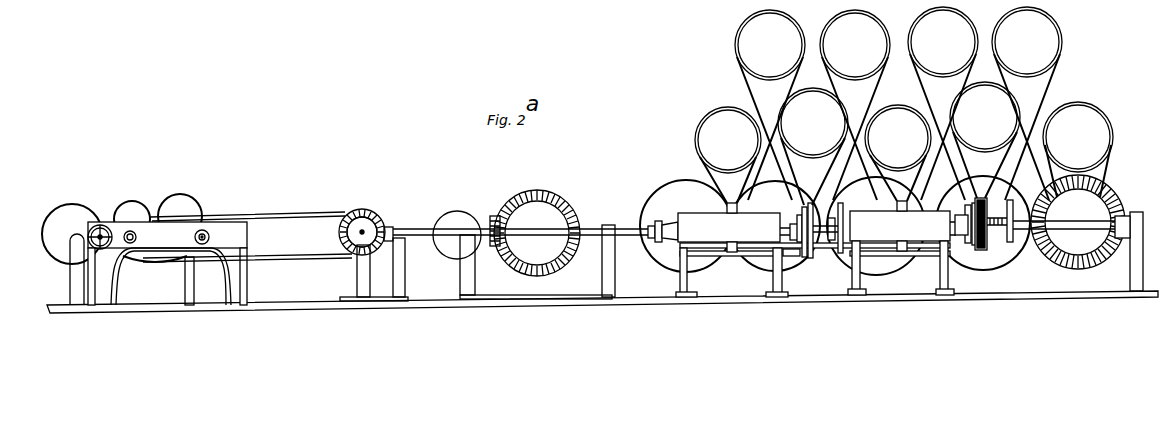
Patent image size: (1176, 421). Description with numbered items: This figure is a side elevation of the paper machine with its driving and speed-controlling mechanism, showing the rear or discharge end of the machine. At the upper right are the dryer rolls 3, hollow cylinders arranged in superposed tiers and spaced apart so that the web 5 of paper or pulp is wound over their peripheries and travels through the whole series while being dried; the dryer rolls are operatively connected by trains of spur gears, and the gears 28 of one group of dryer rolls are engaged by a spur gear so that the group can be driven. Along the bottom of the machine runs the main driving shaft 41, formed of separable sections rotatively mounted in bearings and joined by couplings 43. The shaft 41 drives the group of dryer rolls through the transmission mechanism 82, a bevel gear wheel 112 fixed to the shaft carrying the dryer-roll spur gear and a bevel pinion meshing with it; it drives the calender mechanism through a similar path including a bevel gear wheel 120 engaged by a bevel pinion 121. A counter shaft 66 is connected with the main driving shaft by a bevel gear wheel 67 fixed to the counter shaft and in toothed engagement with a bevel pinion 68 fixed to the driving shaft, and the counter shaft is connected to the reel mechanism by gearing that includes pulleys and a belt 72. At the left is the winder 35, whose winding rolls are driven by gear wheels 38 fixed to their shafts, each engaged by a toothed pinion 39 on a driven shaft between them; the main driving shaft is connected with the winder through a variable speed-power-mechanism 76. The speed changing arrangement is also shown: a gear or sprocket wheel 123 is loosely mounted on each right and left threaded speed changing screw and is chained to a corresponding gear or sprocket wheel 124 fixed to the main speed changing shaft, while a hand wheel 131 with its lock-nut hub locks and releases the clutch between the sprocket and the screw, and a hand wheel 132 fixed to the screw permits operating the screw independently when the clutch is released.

The dryer rolls 3 is at (840, 73).
The web 5 is at (920, 80).
The gears 28 is at (672, 192).
The winder 35 is at (154, 204).
The gear wheels 38 is at (76, 214).
The toothed gear wheel or pinion 39 is at (133, 213).
The main driving shaft 41 is at (960, 233).
The couplings 43 is at (657, 242).
The counter shaft 66 is at (361, 230).
The bevel gear wheel 67 is at (370, 212).
The bevel pinion 68 is at (389, 227).
The belt 72 is at (433, 211).
The variable speed-power-mechanism 76 is at (227, 230).
The transmission mechanism 82 is at (923, 228).
The bevel gear wheel 112 is at (1074, 252).
The bevel gear wheel 120 is at (538, 204).
The bevel pinion 121 is at (492, 221).
The gear or sprocket wheel 123 is at (800, 208).
The gear or sprocket wheel 124 is at (795, 256).
The hand wheel 131 is at (992, 247).
The hand wheel 132 is at (1013, 195).